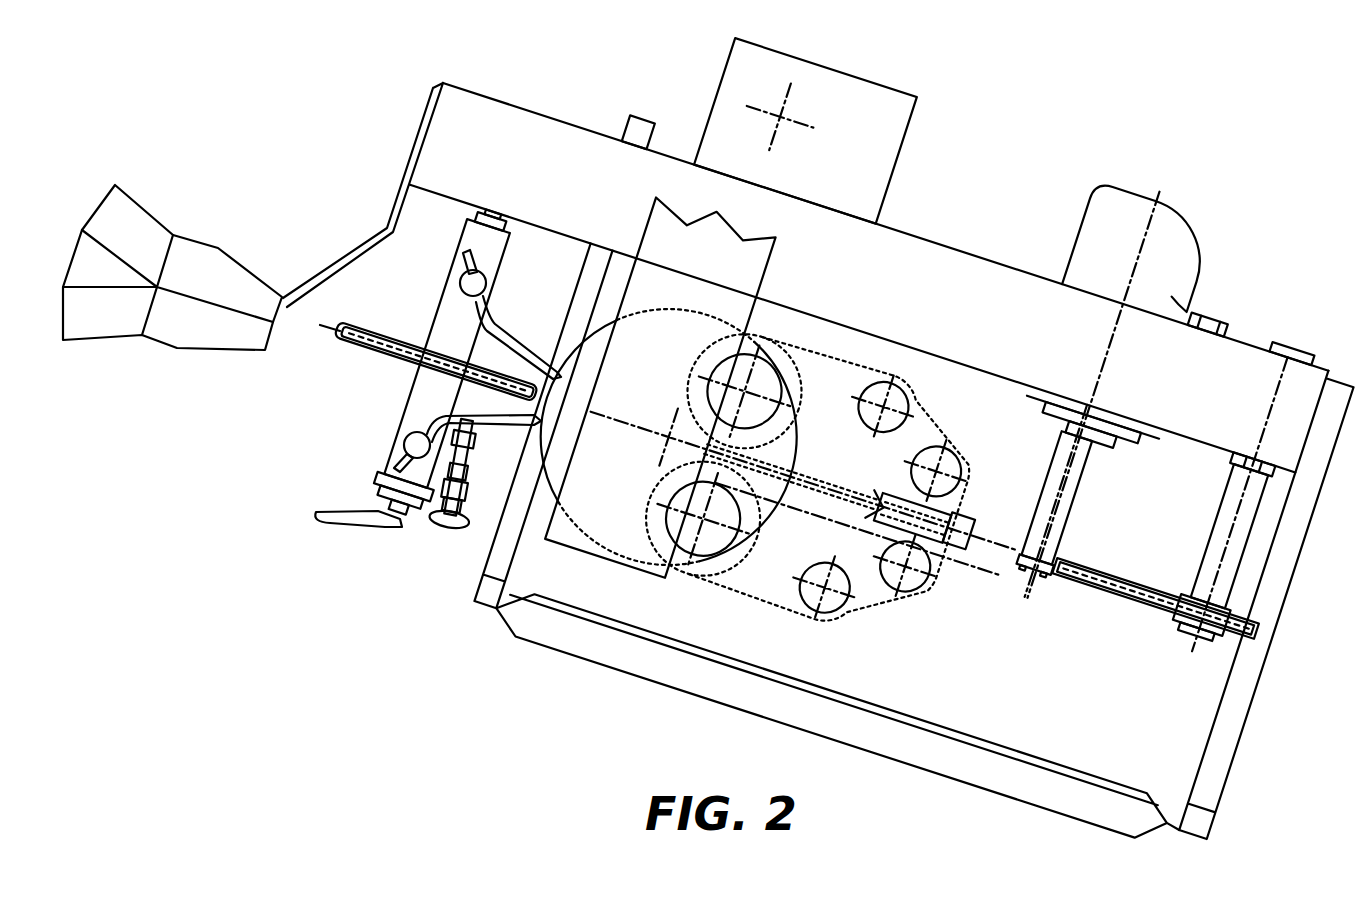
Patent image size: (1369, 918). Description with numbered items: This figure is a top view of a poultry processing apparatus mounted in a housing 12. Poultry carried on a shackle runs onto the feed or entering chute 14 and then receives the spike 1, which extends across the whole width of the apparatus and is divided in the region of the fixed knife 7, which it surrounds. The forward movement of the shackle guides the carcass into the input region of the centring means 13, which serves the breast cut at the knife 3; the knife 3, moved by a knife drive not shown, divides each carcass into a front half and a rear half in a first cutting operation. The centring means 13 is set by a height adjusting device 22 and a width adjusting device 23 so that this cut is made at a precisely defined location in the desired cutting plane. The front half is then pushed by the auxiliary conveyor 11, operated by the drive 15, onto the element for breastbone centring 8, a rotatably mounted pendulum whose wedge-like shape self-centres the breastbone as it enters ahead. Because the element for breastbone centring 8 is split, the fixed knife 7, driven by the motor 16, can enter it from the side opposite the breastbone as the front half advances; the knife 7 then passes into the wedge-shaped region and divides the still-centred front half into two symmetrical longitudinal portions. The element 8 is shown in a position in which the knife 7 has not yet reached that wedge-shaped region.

The spike 1 is at (342, 340).
The knife 3 is at (610, 517).
The fixed knife 7 is at (1010, 563).
The element for breastbone centring 8 is at (960, 553).
The auxiliary conveyor 11 is at (888, 610).
The housing 12 is at (535, 128).
The centring means 13 is at (500, 422).
The entering chute 14 is at (203, 337).
The drive 15 is at (835, 98).
The motor 16 is at (1173, 240).
The height adjusting device 22 is at (390, 523).
The width adjusting device 23 is at (443, 525).